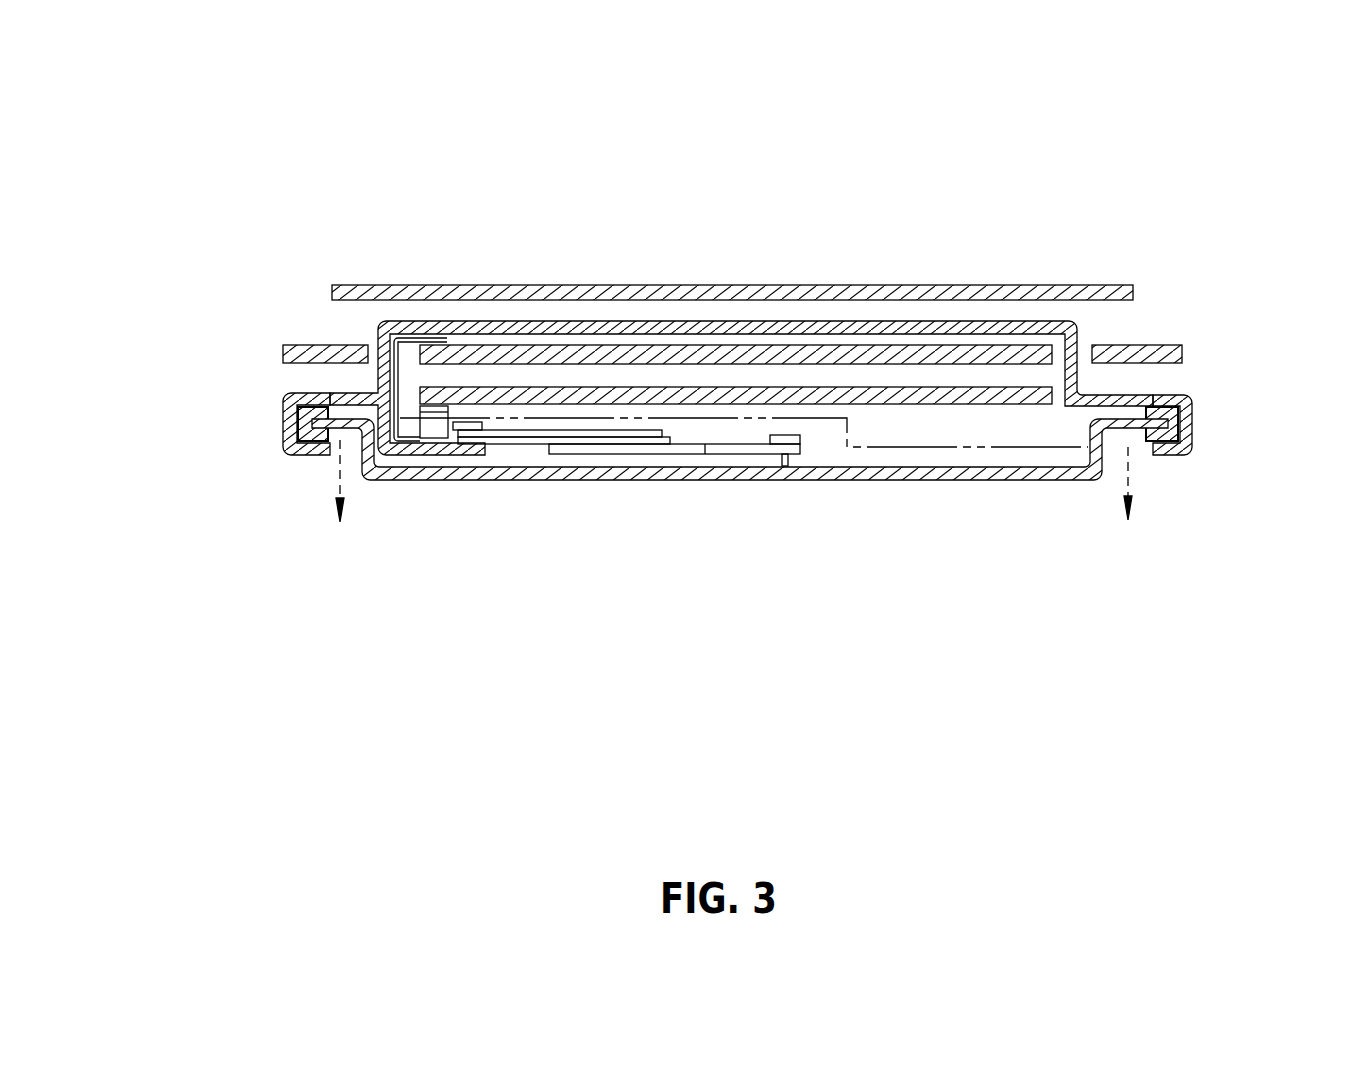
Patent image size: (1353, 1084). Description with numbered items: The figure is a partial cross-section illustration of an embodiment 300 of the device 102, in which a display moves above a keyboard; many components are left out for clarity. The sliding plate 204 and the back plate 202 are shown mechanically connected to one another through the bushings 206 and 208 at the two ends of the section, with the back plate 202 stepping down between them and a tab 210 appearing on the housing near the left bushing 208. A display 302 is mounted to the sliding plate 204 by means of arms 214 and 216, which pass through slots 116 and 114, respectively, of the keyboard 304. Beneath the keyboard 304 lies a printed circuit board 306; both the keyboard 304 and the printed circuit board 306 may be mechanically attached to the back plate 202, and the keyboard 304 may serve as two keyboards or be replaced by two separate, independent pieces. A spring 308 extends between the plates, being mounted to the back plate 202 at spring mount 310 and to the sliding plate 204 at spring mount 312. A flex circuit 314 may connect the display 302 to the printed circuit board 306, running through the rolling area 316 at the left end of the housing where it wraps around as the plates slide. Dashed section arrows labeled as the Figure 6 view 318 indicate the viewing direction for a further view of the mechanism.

The device 102 is at (430, 480).
The slot 114 is at (1082, 325).
The slot 116 is at (380, 338).
The back plate 202 is at (1007, 480).
The sliding plate 204 is at (1138, 395).
The bushing 206 is at (1153, 445).
The bushing 208 is at (327, 455).
The tab 210 is at (393, 445).
The arm 214 is at (284, 347).
The arm 216 is at (1081, 336).
The embodiment 300 is at (941, 664).
The display 302 is at (492, 287).
The keyboard 304 is at (791, 345).
The printed circuit board 306 is at (987, 387).
The spring 308 is at (618, 454).
The spring mount 310 is at (788, 435).
The spring mount 312 is at (472, 421).
The flex circuit 314 is at (406, 400).
The rolling area 316 is at (425, 410).
The Figure 6 view 318 is at (1123, 488).